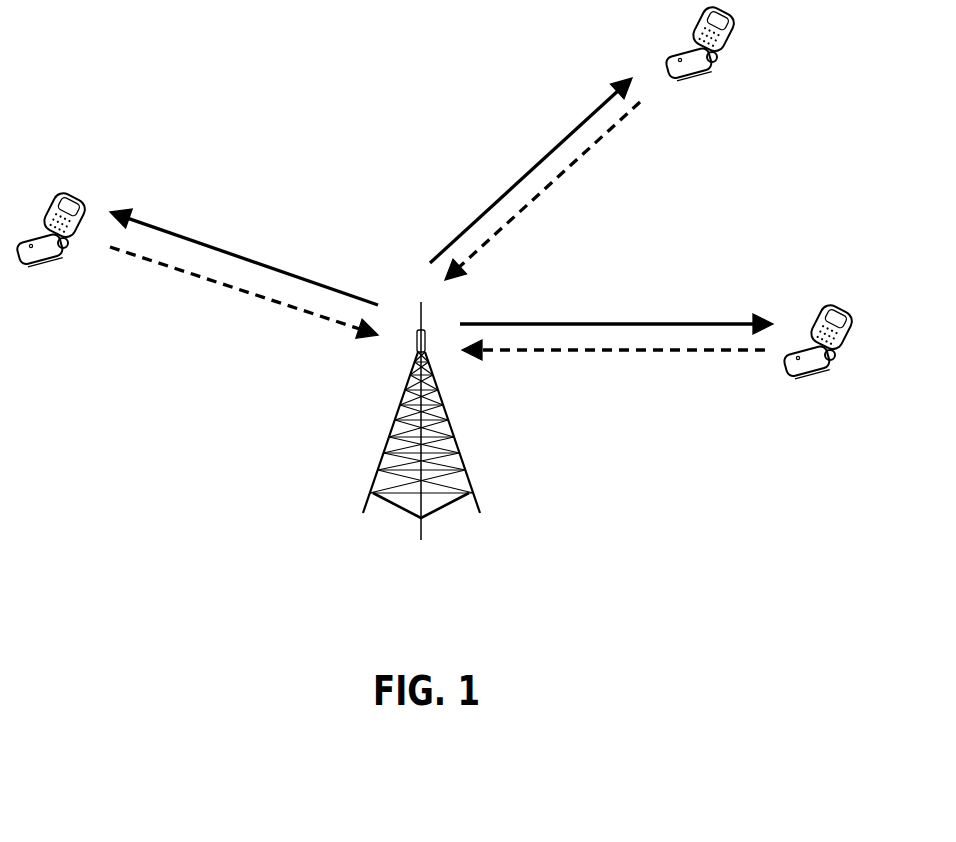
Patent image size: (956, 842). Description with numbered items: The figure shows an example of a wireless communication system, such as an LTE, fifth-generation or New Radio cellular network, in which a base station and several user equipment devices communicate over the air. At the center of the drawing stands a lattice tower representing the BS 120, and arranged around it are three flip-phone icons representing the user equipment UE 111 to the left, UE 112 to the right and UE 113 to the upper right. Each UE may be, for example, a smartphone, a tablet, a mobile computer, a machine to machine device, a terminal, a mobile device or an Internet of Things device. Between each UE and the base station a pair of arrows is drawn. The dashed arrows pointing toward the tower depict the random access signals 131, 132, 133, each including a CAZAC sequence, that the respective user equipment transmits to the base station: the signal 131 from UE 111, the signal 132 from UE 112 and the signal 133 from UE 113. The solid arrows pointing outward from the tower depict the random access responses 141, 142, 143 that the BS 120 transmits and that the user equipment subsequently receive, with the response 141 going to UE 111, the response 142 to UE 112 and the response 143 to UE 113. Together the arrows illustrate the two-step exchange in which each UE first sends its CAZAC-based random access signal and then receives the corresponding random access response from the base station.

The user equipment 111 is at (62, 260).
The user equipment 112 is at (830, 370).
The user equipment 113 is at (712, 70).
The base station 120 is at (467, 478).
The random access signal 131 is at (273, 302).
The random access signal 132 is at (587, 352).
The random access signal 133 is at (567, 170).
The random access response 141 is at (195, 240).
The random access response 142 is at (703, 322).
The random access response 143 is at (572, 133).